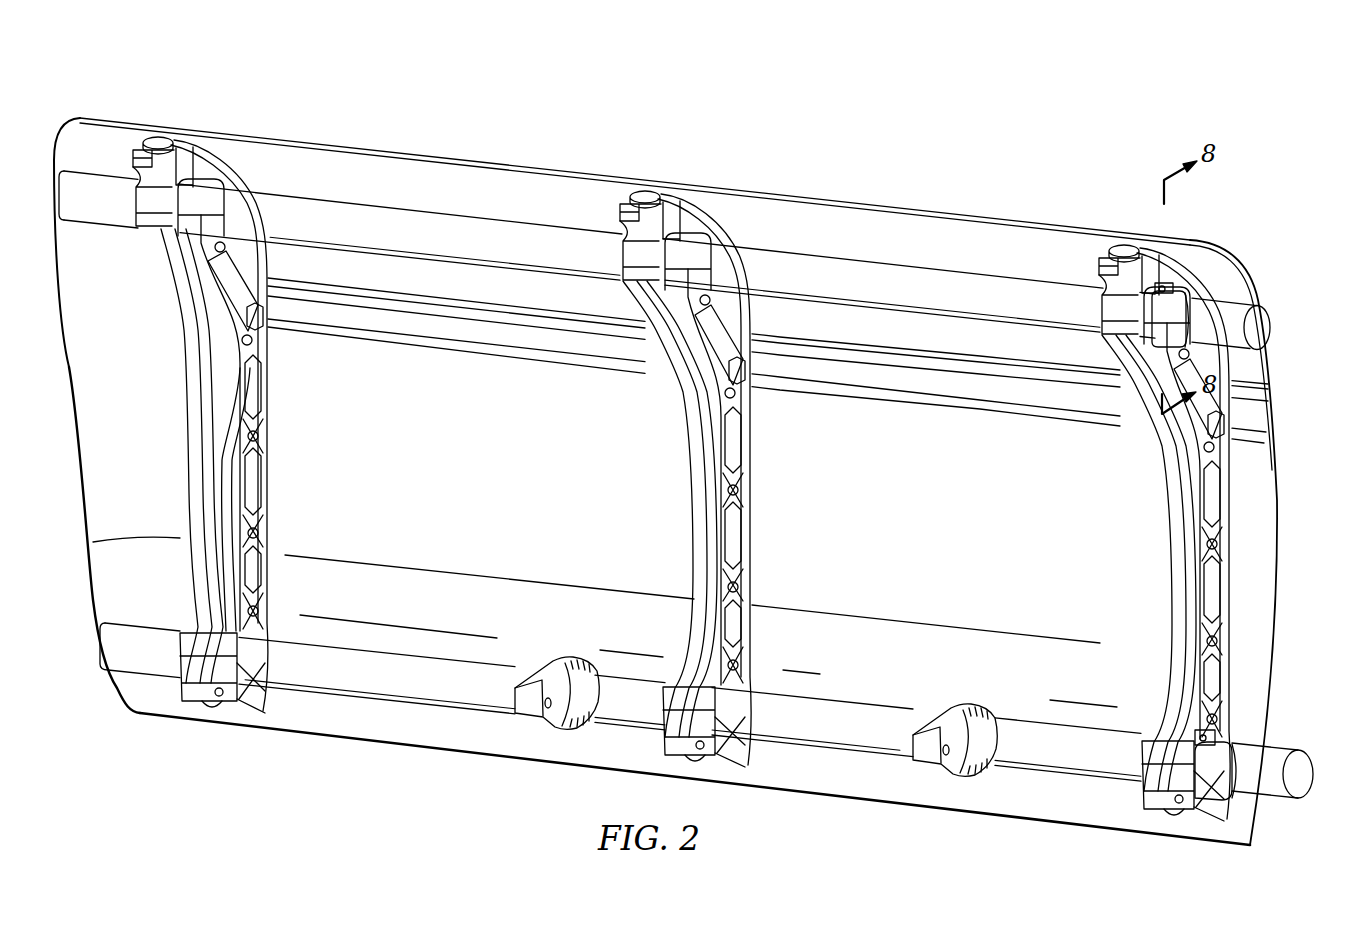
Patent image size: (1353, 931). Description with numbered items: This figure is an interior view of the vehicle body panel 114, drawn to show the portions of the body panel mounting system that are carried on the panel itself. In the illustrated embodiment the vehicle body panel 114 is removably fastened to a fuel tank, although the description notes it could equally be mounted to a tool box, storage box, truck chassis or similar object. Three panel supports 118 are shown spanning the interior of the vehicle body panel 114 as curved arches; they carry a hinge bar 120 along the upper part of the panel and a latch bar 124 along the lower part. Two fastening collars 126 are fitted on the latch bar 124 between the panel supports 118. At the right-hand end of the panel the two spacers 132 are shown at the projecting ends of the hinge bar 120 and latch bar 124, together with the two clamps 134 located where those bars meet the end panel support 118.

The vehicle body panel 114 is at (397, 152).
The panel supports 118 is at (272, 478).
The hinge bar 120 is at (850, 267).
The latch bar 124 is at (380, 660).
The fastening collars 126 is at (560, 657).
The spacers 132 is at (1190, 287).
The clamps 134 is at (1160, 242).